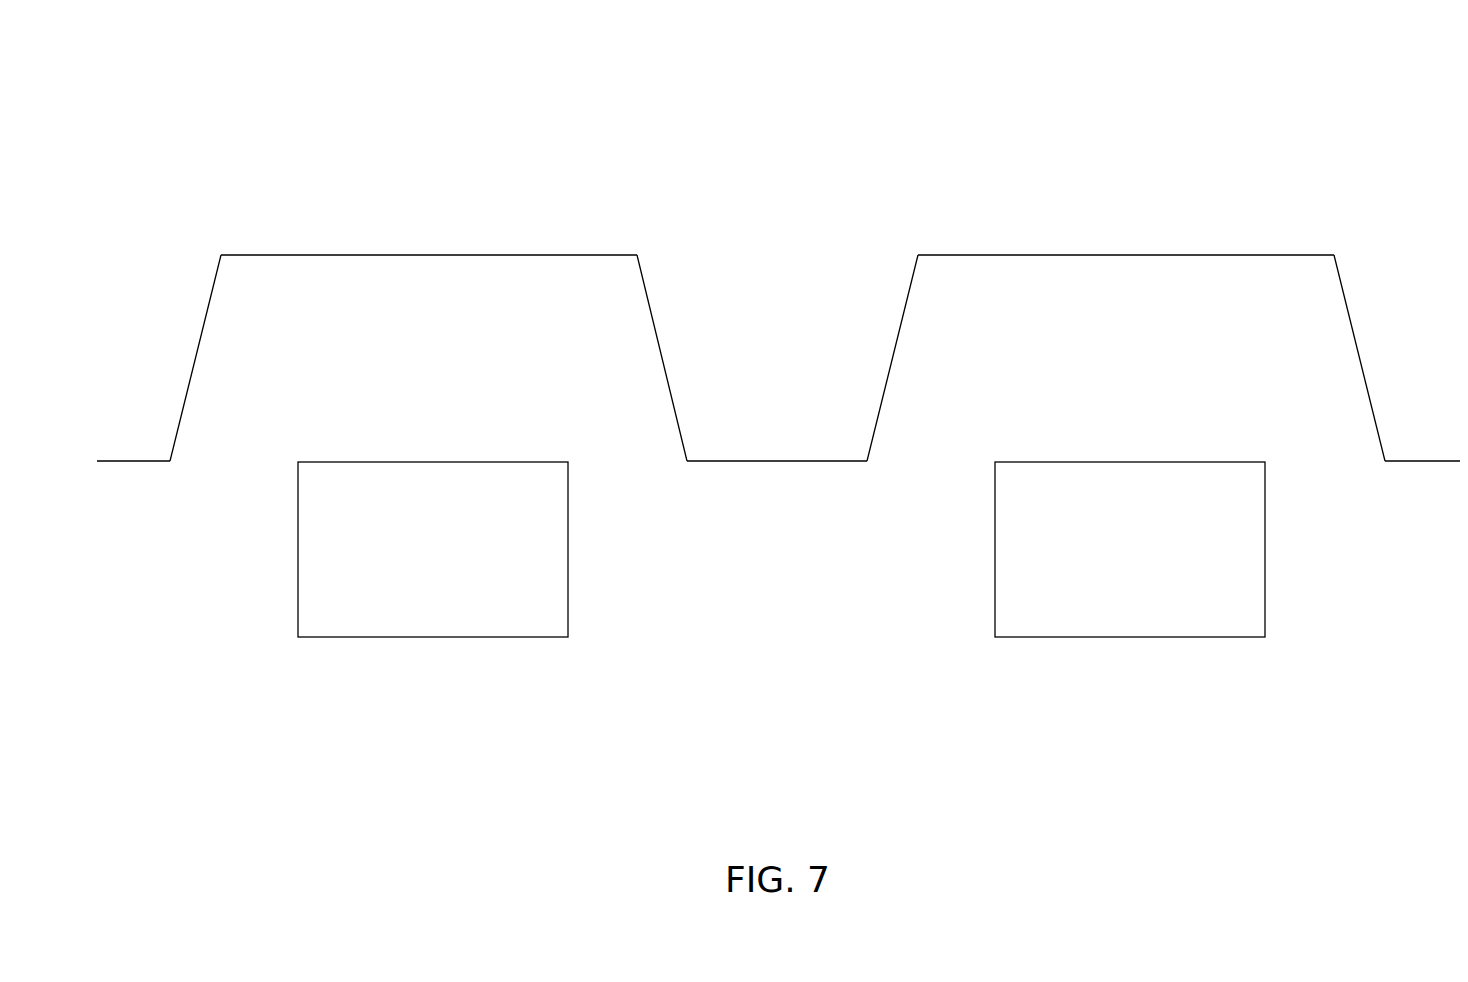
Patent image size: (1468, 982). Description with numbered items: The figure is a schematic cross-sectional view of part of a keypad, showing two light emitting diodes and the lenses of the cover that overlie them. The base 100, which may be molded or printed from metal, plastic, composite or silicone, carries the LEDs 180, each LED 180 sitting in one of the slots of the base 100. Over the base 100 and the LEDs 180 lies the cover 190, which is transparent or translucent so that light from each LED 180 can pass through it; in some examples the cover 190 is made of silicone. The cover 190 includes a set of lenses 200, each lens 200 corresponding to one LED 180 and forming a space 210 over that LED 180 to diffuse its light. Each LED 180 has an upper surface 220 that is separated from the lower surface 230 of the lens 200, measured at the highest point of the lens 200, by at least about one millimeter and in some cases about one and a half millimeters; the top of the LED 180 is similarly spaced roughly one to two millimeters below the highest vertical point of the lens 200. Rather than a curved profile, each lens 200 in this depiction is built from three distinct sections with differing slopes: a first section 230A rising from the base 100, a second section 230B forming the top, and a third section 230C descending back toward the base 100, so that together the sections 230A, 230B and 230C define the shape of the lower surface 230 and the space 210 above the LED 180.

The base 100 is at (810, 668).
The LED 180 is at (457, 571).
The cover 190 is at (228, 133).
The lens 200 is at (599, 206).
The space 210 is at (325, 382).
The upper surface 220 is at (451, 447).
The lower surface 230 is at (445, 269).
The first section 230A is at (171, 357).
The second section 230B is at (407, 231).
The third section 230C is at (677, 327).